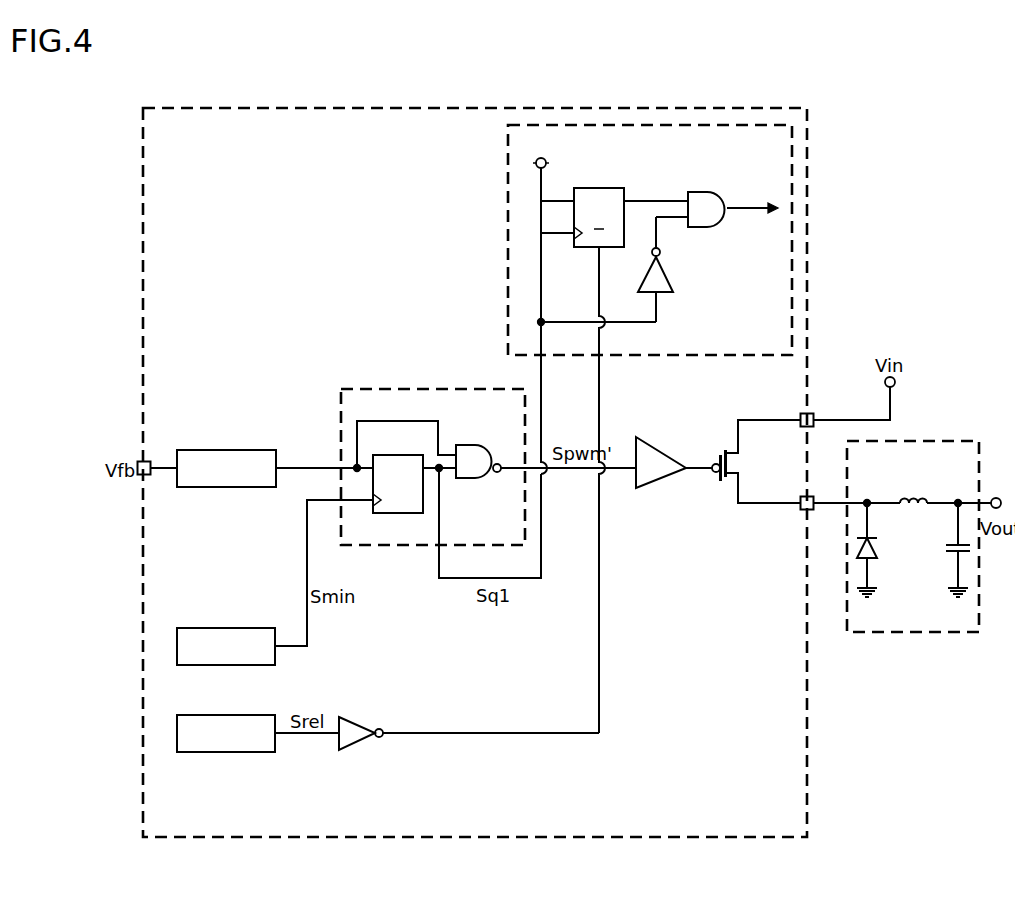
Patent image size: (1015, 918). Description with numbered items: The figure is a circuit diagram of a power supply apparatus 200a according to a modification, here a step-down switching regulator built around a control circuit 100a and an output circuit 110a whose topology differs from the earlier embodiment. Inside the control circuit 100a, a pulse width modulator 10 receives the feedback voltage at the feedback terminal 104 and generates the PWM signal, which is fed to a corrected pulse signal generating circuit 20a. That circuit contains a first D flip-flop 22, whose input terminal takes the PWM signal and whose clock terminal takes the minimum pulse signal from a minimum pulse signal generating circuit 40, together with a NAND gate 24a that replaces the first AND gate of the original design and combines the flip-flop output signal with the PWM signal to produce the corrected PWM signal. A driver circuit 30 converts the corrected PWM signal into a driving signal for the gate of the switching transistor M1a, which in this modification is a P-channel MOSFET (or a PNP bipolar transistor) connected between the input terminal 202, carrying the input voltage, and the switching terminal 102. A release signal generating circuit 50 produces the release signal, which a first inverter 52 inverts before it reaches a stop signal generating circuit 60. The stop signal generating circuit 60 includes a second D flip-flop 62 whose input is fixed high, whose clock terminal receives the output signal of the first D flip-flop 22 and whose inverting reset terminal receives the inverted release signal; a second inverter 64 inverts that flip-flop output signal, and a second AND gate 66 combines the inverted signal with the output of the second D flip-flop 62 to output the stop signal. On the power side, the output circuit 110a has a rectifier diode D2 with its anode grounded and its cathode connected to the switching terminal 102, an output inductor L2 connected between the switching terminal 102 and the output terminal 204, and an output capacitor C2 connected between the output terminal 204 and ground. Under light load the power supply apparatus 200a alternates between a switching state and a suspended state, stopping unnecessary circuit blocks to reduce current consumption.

The pulse width modulator 10 is at (228, 449).
The corrected pulse signal generating circuit 20a is at (432, 388).
The first D flip-flop 22 is at (397, 513).
The NAND gate 24a is at (470, 445).
The driver circuit 30 is at (679, 429).
The minimum pulse signal generating circuit 40 is at (228, 627).
The release signal generating circuit 50 is at (228, 714).
The first inverter 52 is at (360, 717).
The stop signal generating circuit 60 is at (507, 237).
The second D flip-flop 62 is at (598, 186).
The second inverter 64 is at (673, 275).
The second AND gate 66 is at (707, 190).
The control circuit 100a is at (810, 683).
The switching terminal 102 is at (812, 497).
The feedback terminal 104 is at (140, 460).
The output circuit 110a is at (926, 633).
The power supply apparatus 200a is at (560, 880).
The input terminal 202 is at (896, 383).
The output terminal 204 is at (994, 496).
The switching transistor M1a is at (722, 482).
The output inductor L2 is at (915, 490).
The rectifier diode D2 is at (880, 548).
The output capacitor C2 is at (942, 552).